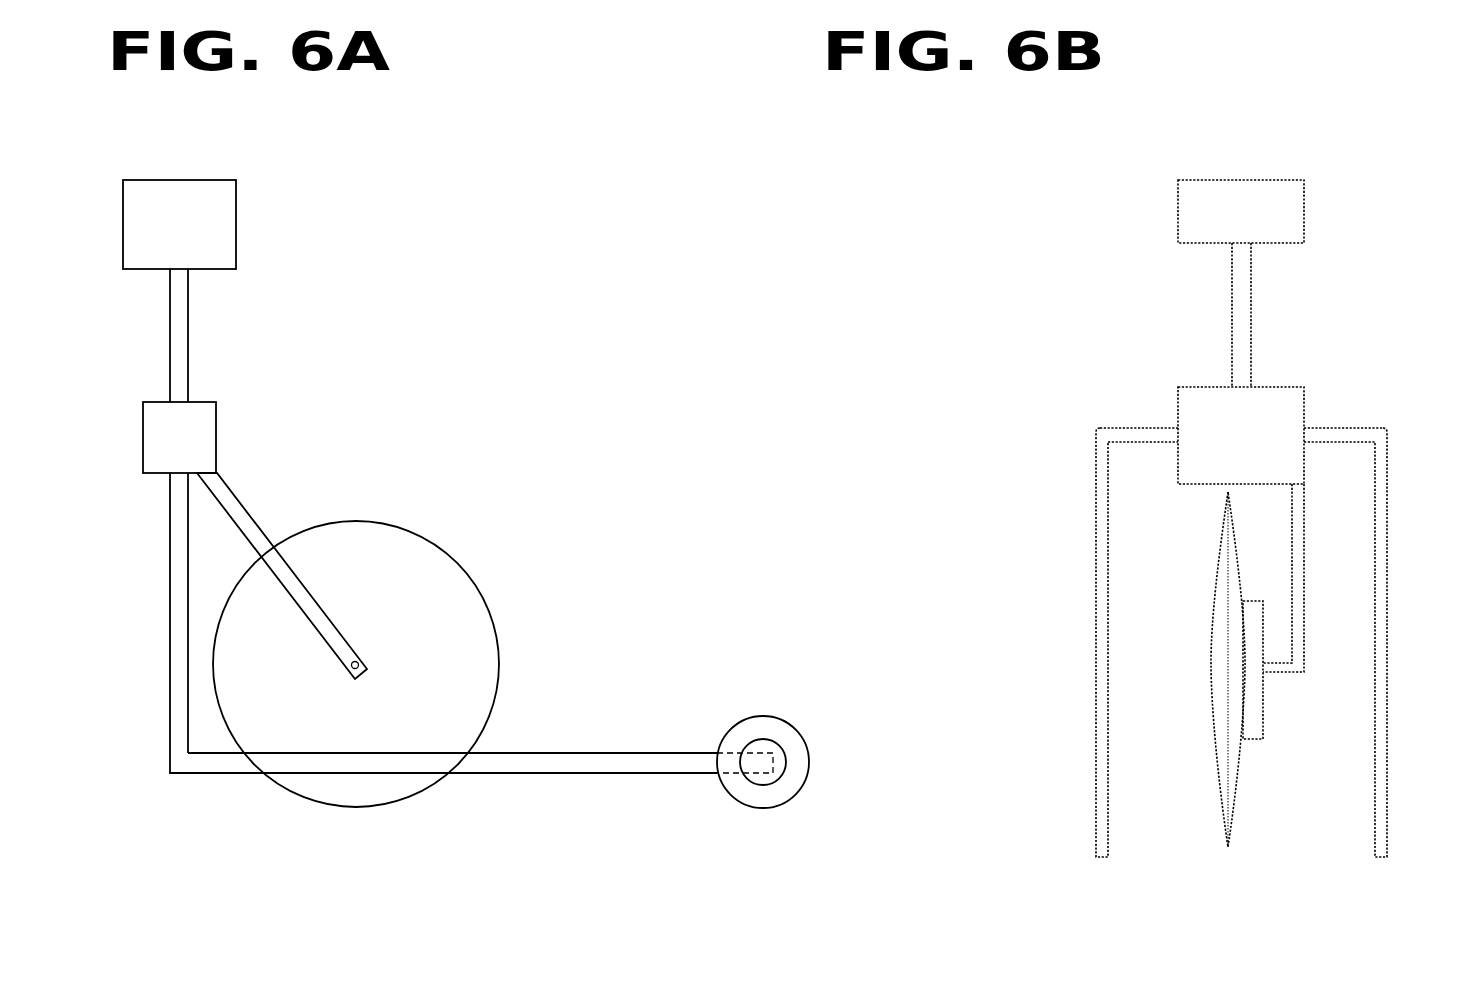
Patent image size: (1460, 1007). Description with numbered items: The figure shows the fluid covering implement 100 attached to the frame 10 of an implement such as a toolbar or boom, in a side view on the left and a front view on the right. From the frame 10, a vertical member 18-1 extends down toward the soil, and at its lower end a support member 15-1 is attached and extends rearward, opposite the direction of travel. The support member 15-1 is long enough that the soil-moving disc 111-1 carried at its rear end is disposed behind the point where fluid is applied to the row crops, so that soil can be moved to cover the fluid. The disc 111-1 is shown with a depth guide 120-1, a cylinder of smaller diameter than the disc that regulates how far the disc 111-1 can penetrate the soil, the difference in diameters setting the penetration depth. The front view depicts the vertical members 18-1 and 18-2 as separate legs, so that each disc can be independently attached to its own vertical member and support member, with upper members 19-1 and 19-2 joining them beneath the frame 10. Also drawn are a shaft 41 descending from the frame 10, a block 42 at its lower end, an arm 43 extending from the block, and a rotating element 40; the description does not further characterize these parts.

In FIG. 6A, the frame 10 is at (236, 210).
In FIG. 6B, the frame 10 is at (1304, 205).
In FIG. 6A, the shaft 41 is at (188, 316).
In FIG. 6B, the shaft 41 is at (1251, 268).
In FIG. 6A, the coupling block 42 is at (216, 420).
In FIG. 6B, the coupling block 42 is at (1304, 400).
In FIG. 6A, the crank arm 43 is at (250, 514).
In FIG. 6B, the crank arm 43 is at (1300, 675).
In FIG. 6A, the wheel / disc 40 is at (434, 537).
In FIG. 6B, the wheel / disc 40 is at (1218, 787).
In FIG. 6A, the vertical member 18-1 is at (170, 548).
In FIG. 6B, the vertical member 18-1 is at (1387, 635).
In FIG. 6B, the vertical member 18-2 is at (1096, 500).
In FIG. 6B, the first frame top member 19-1 is at (1358, 428).
In FIG. 6B, the second frame top member 19-2 is at (1150, 428).
In FIG. 6A, the support member 15-1 is at (610, 752).
In FIG. 6A, the disc 111-1 is at (762, 716).
In FIG. 6A, the depth guide 120-1 is at (787, 752).
In FIG. 6A, the fluid covering implement 100 is at (785, 558).